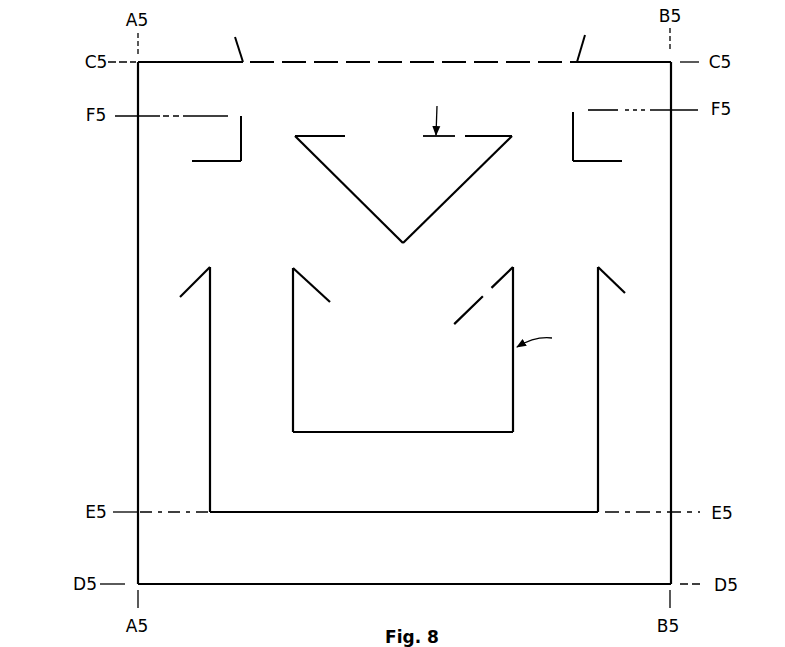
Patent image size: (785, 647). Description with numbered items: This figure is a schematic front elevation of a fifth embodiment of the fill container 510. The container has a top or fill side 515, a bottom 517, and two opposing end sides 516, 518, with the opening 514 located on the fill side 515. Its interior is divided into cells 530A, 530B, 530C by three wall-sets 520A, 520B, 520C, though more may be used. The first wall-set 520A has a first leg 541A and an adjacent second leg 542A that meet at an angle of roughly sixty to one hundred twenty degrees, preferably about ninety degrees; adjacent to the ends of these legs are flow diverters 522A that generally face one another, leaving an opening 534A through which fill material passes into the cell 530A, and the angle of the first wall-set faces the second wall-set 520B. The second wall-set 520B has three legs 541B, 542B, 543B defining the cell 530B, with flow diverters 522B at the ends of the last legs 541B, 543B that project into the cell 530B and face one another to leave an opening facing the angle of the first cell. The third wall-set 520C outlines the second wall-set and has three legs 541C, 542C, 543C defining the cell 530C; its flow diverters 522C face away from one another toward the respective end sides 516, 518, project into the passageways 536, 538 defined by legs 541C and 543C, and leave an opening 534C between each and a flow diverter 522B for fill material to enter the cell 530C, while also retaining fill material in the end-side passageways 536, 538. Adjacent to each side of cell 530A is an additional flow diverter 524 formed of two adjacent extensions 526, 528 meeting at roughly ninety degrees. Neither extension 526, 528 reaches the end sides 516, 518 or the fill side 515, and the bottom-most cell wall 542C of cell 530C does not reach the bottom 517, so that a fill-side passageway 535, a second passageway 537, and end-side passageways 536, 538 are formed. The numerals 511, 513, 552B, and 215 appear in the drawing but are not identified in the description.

The fill container 510 is at (386, 324).
The side surface 511 is at (158, 486).
The side surface 513 is at (138, 451).
The opening 514 is at (358, 62).
The fill side 515 is at (597, 62).
The end side 516 is at (138, 258).
The bottom 517 is at (517, 587).
The end side 518 is at (671, 278).
The first wall-set 520A is at (425, 163).
The second wall-set 520B is at (404, 362).
The third wall-set 520C is at (410, 405).
The flow diverter 522A is at (340, 135).
The flow diverter 522B is at (303, 276).
The flow diverter 522C is at (182, 295).
The flow diverter 524 is at (227, 147).
The extension 526 is at (226, 166).
The extension 528 is at (241, 117).
The cell 530A is at (384, 195).
The cell 530B is at (383, 408).
The cell 530C is at (430, 486).
The opening 534A is at (472, 164).
The opening 534C is at (232, 270).
The fill-side passageway 535 is at (383, 103).
The end-side passageway 536 is at (191, 363).
The second passageway 537 is at (424, 559).
The end-side passageway 538 is at (652, 363).
The first leg 541A is at (357, 200).
The leg 541B is at (293, 352).
The leg 541C is at (209, 460).
The second leg 542A is at (440, 210).
The leg 542B is at (370, 433).
The leg 542C is at (360, 513).
The leg 543B is at (512, 404).
The leg 543C is at (598, 445).
The chamfer 552B is at (433, 293).
The tool body 215 is at (170, 646).